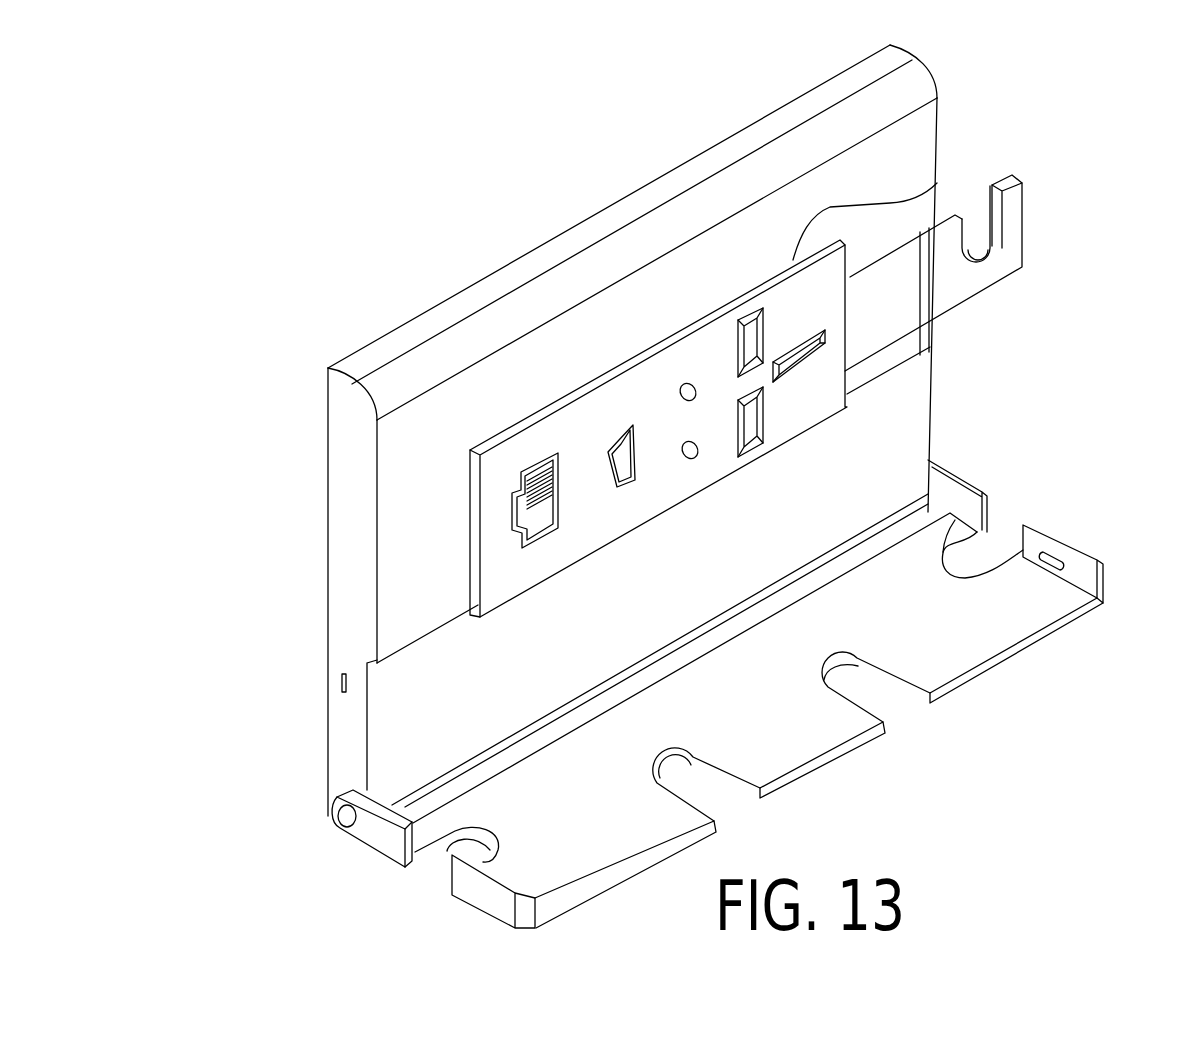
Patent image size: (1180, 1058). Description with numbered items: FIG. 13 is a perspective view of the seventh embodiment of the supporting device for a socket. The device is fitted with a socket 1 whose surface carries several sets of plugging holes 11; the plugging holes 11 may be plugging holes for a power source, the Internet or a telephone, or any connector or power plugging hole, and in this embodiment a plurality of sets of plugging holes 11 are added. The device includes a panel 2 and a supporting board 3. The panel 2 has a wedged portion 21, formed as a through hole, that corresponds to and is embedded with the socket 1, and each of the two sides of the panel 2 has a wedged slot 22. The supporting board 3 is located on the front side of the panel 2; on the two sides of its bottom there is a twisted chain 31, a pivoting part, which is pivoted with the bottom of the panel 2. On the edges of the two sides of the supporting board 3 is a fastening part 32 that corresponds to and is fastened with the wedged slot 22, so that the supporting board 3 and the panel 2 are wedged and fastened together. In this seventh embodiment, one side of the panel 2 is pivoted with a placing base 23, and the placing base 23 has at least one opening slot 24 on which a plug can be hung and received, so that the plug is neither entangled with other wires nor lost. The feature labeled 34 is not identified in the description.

The socket 1 is at (608, 404).
The panel 2 is at (625, 262).
The supporting board 3 is at (962, 583).
The plugging holes 11 is at (508, 505).
The wedged portion 21 is at (935, 185).
The wedged slot 22 is at (340, 683).
The placing base 23 is at (1023, 267).
The opening slot 24 is at (977, 215).
The twisted chain 31 is at (342, 819).
The fastening part 32 is at (1052, 556).
The notches 34 is at (437, 866).